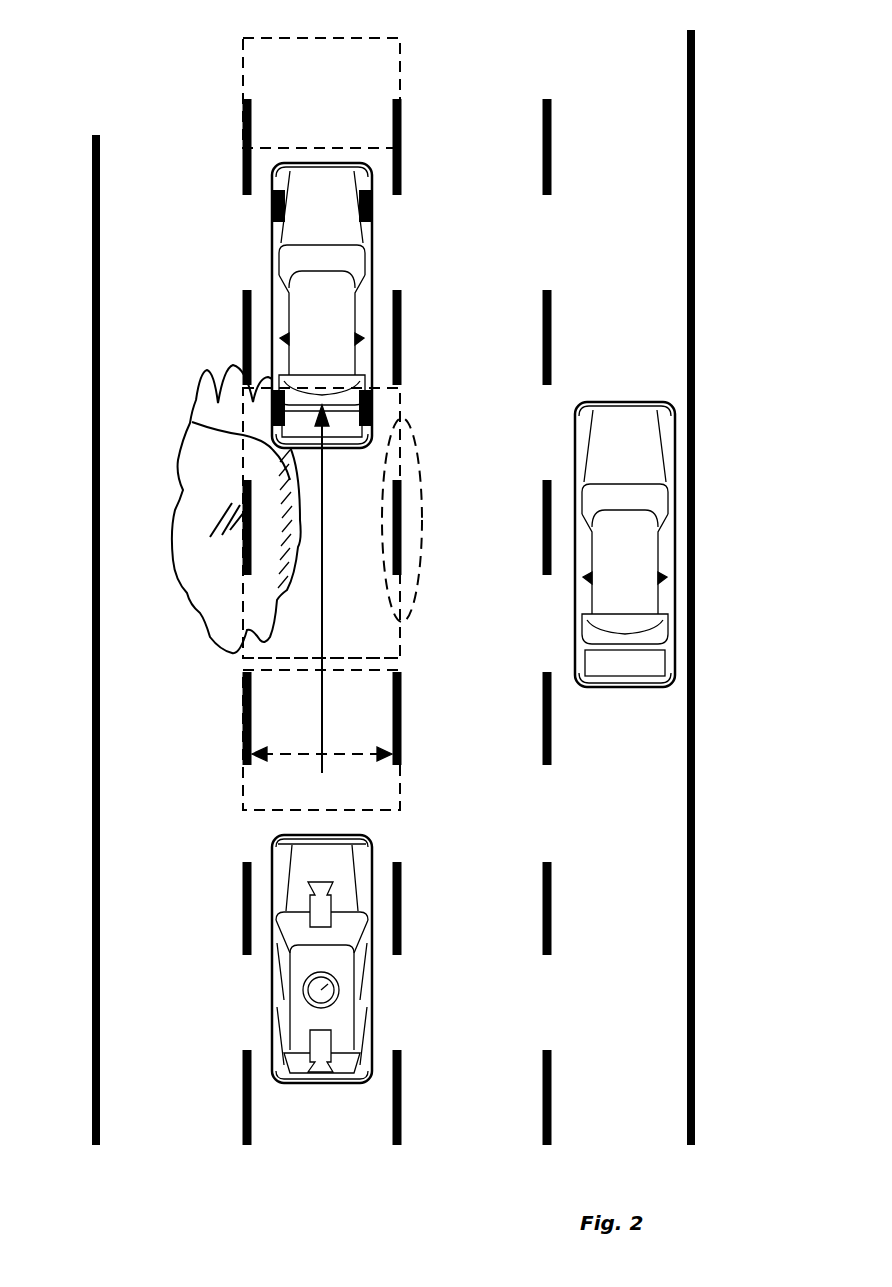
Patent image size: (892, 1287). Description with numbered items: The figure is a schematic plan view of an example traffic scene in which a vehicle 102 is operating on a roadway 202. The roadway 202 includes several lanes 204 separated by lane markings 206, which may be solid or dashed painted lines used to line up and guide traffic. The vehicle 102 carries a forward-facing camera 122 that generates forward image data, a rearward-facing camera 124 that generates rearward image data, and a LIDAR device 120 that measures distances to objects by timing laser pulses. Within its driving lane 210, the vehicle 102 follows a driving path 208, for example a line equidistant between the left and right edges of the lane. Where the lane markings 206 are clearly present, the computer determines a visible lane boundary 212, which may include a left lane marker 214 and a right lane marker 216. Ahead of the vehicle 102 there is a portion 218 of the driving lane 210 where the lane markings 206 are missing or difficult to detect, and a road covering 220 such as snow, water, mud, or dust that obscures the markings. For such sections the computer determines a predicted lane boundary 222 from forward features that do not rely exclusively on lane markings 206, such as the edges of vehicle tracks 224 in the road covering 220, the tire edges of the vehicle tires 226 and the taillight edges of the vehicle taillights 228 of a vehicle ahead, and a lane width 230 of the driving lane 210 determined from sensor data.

The roadway 202 is at (153, 98).
The lanes 204 is at (187, 184).
The lane markings 206 is at (546, 106).
The driving path 208 is at (340, 548).
The driving lane 210 is at (341, 104).
The visible lane boundary 212 is at (400, 78).
The left lane marker 214 is at (243, 710).
The right lane marker 216 is at (400, 706).
The portion of the driving lane 218 is at (420, 480).
The road covering 220 is at (200, 447).
The predicted lane boundary 222 is at (402, 635).
The vehicle tracks 224 is at (277, 457).
The vehicle tires 226 is at (372, 412).
The vehicle taillights 228 is at (365, 447).
The lane width 230 is at (290, 752).
The vehicle 102 is at (365, 993).
The LIDAR device 120 is at (310, 1000).
The forward-facing camera 122 is at (317, 918).
The rearward-facing camera 124 is at (315, 1040).